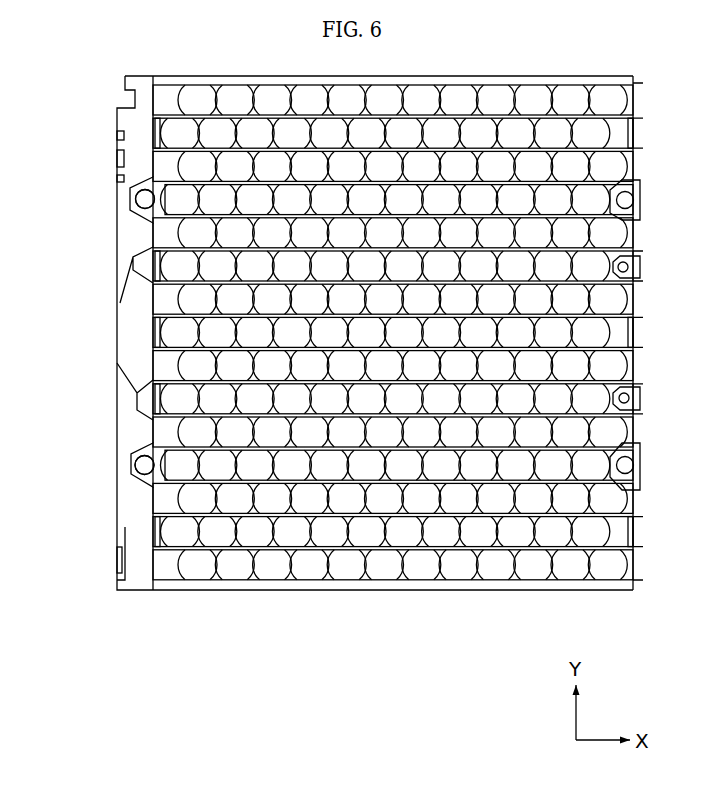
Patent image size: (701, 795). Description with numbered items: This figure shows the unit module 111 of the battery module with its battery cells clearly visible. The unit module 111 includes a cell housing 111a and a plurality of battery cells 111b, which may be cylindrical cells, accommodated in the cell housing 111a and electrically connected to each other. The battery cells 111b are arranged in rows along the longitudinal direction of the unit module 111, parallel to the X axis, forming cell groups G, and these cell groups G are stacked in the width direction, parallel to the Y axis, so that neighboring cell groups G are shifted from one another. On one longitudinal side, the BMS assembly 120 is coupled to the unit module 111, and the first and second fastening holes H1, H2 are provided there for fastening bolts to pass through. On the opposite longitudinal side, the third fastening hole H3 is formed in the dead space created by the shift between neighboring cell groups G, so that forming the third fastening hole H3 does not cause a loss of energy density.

The unit module 111 is at (407, 369).
The cell housing 111a is at (535, 591).
The battery cell 111b is at (494, 566).
The BMS assembly 120 is at (87, 369).
The first fastening hole H1 is at (87, 332).
The second fastening hole H2 is at (145, 465).
The third fastening hole H3 is at (626, 466).
The cell group G is at (631, 431).